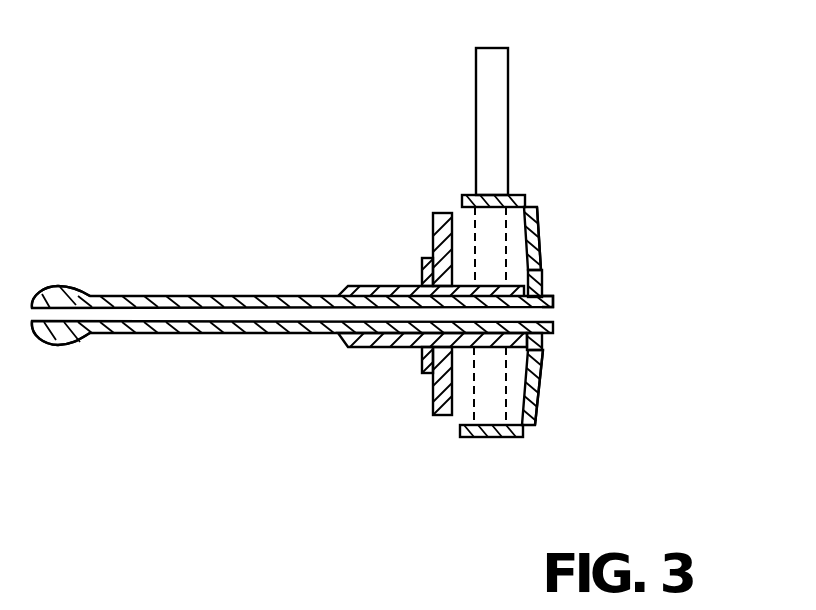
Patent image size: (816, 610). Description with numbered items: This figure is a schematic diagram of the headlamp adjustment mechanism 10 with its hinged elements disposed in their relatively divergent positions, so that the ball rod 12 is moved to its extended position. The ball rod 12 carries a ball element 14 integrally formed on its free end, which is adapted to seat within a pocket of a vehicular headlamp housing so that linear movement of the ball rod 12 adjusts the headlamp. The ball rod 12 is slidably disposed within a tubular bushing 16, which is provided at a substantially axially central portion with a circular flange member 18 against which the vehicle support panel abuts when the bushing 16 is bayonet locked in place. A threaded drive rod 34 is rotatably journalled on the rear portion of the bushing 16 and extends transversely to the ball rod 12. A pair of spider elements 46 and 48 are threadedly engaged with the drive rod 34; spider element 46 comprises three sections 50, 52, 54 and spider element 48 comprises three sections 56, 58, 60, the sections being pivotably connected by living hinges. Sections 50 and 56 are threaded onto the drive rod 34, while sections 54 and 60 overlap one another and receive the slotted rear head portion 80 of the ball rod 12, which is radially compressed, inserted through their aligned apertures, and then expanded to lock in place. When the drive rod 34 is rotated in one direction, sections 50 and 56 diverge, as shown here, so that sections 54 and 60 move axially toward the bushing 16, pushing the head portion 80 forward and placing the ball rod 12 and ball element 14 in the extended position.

The headlamp adjustment mechanism 10 is at (638, 243).
The ball rod 12 is at (157, 337).
The ball element 14 is at (58, 345).
The tubular bushing 16 is at (377, 284).
The circular flange member 18 is at (432, 412).
The threaded drive rod 34 is at (498, 85).
The spider element 46 is at (540, 210).
The spider element 48 is at (536, 418).
The spider element section 50 is at (500, 195).
The spider element section 52 is at (539, 245).
The spider element section 54 is at (543, 288).
The spider element section 56 is at (502, 437).
The spider element section 58 is at (538, 378).
The spider element section 60 is at (542, 343).
The rear head portion 80 is at (553, 301).